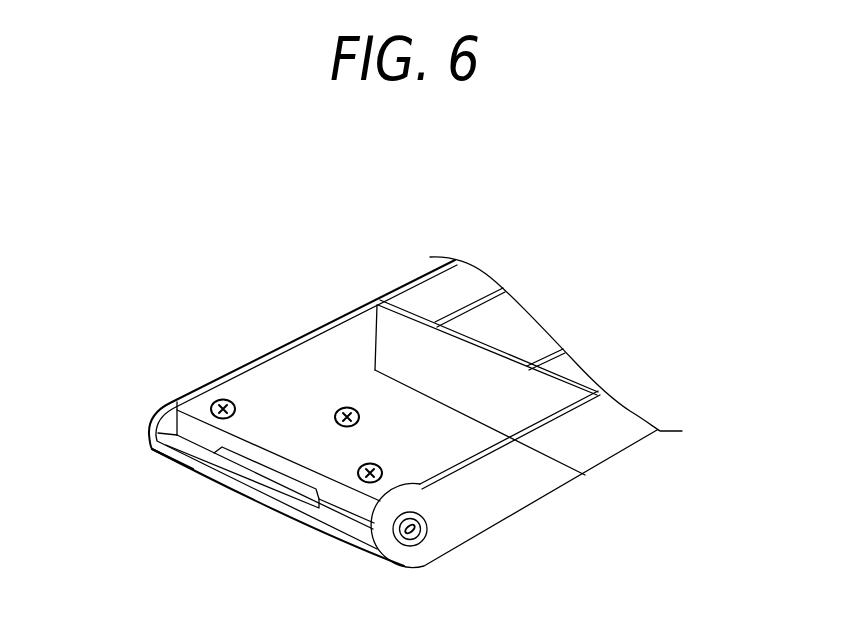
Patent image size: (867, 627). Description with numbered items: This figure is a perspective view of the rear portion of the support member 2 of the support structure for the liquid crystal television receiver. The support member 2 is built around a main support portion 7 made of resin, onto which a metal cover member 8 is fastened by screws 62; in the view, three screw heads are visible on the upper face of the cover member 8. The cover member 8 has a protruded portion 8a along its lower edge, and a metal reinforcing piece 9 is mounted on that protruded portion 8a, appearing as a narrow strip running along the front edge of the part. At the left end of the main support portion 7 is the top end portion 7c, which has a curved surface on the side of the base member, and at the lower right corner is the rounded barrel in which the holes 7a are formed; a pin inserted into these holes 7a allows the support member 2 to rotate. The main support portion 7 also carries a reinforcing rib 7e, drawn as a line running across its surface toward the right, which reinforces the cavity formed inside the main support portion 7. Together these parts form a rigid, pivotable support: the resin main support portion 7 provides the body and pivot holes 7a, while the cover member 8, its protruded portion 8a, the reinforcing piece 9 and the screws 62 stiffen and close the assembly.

The support member 2 is at (381, 261).
The main support portion 7 is at (503, 480).
The holes 7a is at (428, 526).
The top end portion 7c is at (193, 470).
The reinforcing rib 7e is at (585, 475).
The cover member 8 is at (257, 385).
The protruded portion 8a is at (337, 513).
The reinforcing piece 9 is at (240, 470).
The screws 62 is at (347, 413).